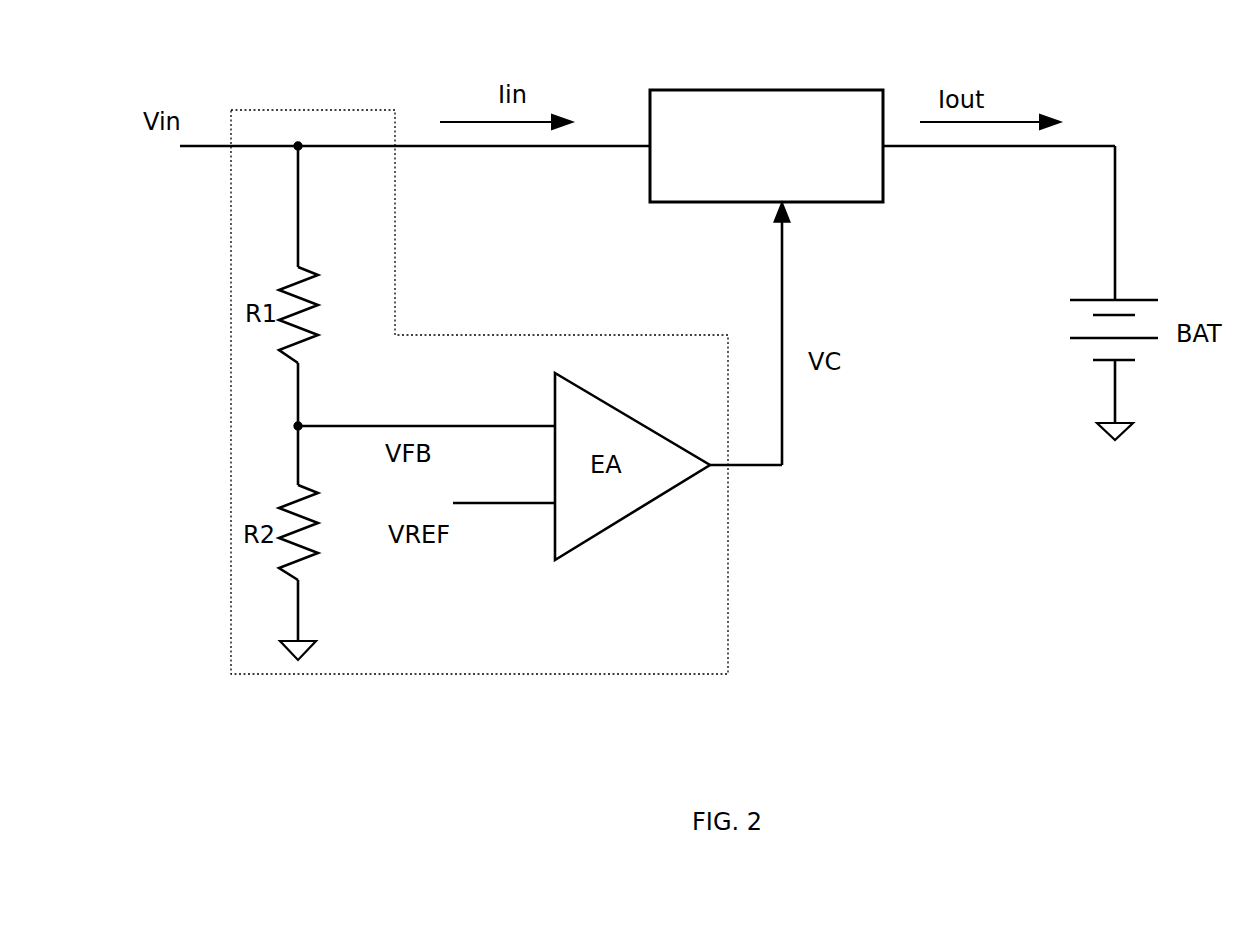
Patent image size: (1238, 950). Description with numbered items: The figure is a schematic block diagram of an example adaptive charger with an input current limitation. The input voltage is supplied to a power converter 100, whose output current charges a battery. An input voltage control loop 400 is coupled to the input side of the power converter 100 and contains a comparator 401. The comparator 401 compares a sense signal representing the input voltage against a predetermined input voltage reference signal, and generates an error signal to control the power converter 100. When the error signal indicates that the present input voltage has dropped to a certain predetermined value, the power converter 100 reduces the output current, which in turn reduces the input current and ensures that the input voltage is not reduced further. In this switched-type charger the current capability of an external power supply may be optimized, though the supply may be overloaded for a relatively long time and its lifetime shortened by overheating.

The power converter 100 is at (782, 90).
The input voltage control loop 400 is at (495, 335).
The comparator 401 is at (675, 498).